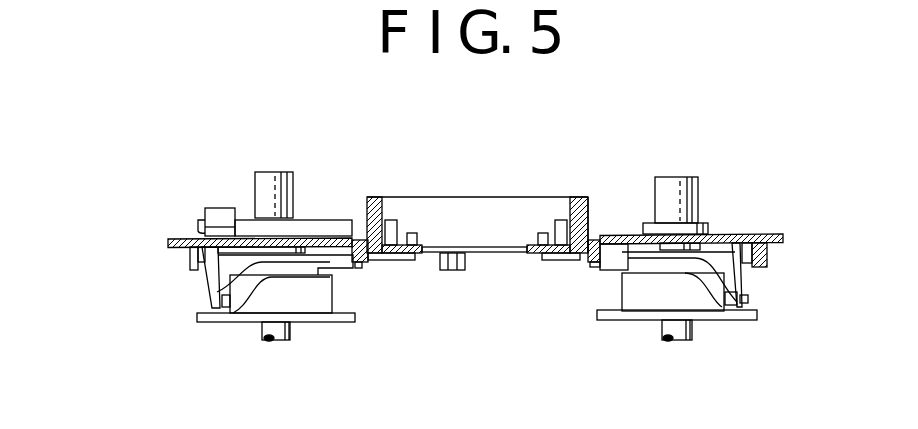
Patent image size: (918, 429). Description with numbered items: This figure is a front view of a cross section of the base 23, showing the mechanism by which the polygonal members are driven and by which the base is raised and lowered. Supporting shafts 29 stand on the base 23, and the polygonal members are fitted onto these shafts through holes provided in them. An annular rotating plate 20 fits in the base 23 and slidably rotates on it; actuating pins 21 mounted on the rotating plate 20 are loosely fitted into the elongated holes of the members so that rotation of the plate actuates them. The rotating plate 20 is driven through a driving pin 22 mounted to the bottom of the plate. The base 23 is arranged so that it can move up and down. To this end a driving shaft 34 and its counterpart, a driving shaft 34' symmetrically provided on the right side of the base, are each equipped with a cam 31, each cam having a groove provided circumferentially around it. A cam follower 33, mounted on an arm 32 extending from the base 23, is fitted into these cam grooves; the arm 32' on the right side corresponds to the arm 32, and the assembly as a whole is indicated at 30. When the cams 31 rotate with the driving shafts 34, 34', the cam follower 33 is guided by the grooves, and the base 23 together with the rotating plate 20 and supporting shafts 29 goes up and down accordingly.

The annular rotating plate 20 is at (515, 255).
The actuating pins 21 is at (542, 232).
The driving pin 22 is at (452, 272).
The base 23 is at (588, 212).
The supporting shafts 29 is at (561, 220).
The holder 30 is at (183, 265).
The cam 31 is at (312, 300).
The arm 32 is at (222, 321).
The leaf spring 32' is at (723, 275).
The cam follower 33 is at (216, 307).
The driving shaft 34 is at (248, 189).
The driving shaft 34' is at (715, 191).